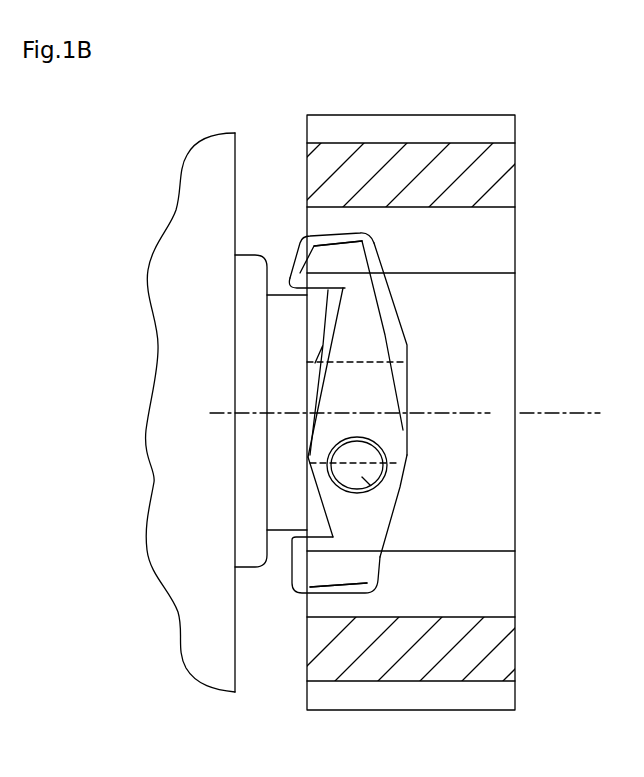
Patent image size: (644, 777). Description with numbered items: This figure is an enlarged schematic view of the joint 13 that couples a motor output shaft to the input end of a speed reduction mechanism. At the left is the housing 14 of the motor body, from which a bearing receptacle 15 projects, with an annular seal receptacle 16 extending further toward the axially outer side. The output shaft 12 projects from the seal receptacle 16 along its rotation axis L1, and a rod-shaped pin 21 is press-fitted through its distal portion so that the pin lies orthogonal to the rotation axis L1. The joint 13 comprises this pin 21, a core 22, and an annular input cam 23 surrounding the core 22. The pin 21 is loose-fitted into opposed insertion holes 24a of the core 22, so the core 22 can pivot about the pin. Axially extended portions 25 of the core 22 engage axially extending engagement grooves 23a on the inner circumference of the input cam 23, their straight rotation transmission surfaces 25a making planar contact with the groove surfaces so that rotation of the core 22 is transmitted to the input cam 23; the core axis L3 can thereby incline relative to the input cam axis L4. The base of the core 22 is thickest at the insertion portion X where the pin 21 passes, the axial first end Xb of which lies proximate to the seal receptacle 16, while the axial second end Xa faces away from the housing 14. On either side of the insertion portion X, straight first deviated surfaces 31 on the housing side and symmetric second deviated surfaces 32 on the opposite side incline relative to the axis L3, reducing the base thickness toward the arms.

The output shaft 12 is at (327, 402).
The joint 13 is at (424, 390).
The housing 14 is at (238, 672).
The bearing receptacle 15 is at (248, 300).
The seal receptacle 16 is at (282, 380).
The pin 21 is at (372, 484).
The core 22 is at (410, 350).
The input cam 23 is at (424, 113).
The engagement groove 23a is at (500, 243).
The insertion hole 24a is at (360, 450).
The axially extended portion 25 is at (302, 252).
The rotation transmission surface 25a is at (352, 256).
The first deviated surface 31 is at (320, 324).
The second deviated surface 32 is at (388, 322).
The rotation axis L1 is at (458, 413).
The center axis of the core L3 is at (220, 413).
The axis of the input cam L4 is at (577, 413).
The insertion portion X is at (308, 483).
The axial second end Xa is at (405, 464).
The axial first end Xb is at (312, 465).